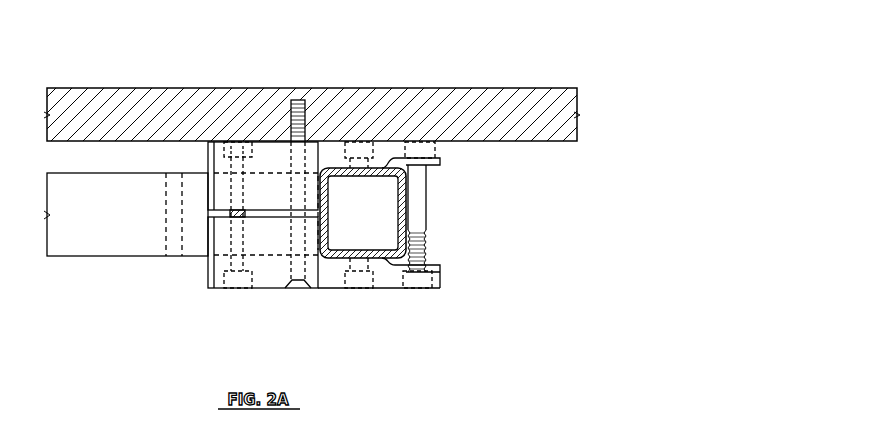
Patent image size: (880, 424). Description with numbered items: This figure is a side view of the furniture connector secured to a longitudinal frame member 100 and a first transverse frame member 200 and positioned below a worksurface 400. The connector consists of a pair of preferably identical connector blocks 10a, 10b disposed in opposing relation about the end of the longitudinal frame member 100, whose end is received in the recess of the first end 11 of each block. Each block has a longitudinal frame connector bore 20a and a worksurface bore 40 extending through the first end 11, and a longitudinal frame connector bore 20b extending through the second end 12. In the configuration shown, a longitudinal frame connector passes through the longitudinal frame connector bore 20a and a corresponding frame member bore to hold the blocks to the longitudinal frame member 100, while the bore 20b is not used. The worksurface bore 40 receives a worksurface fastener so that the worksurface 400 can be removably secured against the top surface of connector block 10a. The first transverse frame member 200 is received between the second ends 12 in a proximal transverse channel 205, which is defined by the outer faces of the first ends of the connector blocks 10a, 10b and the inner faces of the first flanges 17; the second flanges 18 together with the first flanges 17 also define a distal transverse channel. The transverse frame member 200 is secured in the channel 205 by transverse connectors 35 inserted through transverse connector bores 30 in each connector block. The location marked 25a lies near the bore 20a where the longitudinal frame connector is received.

The worksurface 400 is at (507, 100).
The longitudinal frame member 100 is at (86, 222).
The connector block 10a is at (212, 158).
The connector block 10b is at (212, 275).
The longitudinal frame connector bore 20a is at (233, 290).
The longitudinal frame connector bore 20b is at (363, 142).
The bolt head recess 25a is at (233, 138).
The transverse connector 35 is at (412, 138).
The worksurface bore 40 is at (300, 290).
The transverse connector bore 30 is at (425, 290).
The proximal transverse channel 205 is at (350, 208).
The first transverse frame member 200 is at (385, 222).
The first end 11 is at (318, 317).
The first flange 17 is at (380, 317).
The second flange 18 is at (430, 317).
The second end 12 is at (430, 350).